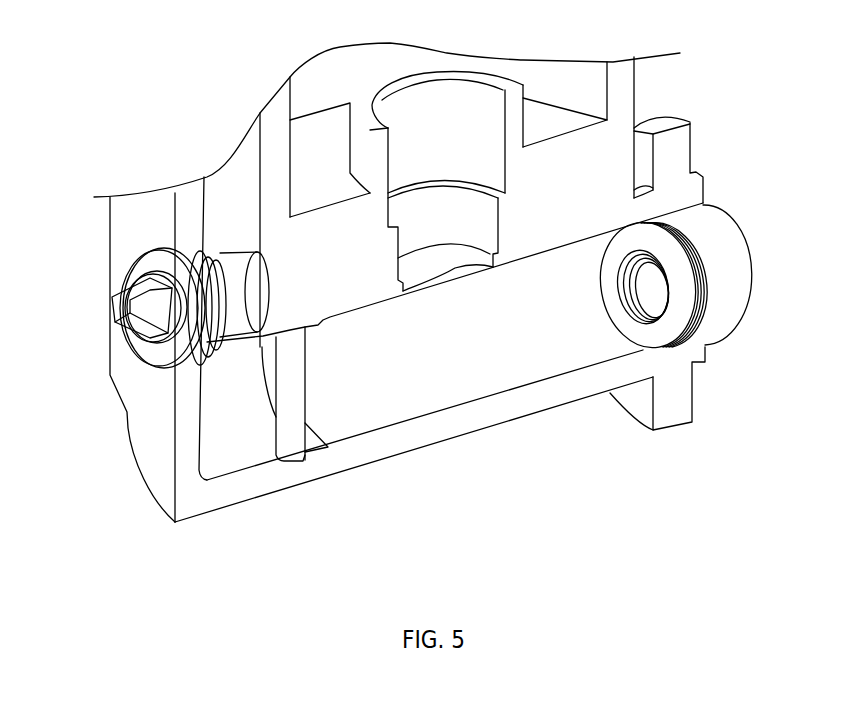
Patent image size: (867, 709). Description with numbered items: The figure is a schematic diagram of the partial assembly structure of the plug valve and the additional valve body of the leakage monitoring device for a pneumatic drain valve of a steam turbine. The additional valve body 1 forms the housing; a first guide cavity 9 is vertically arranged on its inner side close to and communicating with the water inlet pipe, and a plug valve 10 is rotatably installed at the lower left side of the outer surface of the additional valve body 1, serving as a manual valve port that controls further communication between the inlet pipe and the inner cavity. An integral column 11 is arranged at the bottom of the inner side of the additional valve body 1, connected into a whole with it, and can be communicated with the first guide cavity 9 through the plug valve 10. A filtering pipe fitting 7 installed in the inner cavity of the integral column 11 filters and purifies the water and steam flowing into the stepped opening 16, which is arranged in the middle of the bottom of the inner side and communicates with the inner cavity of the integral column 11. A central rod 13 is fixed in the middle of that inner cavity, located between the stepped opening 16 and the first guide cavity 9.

The additional valve body 1 is at (625, 112).
The filtering pipe fitting 7 is at (733, 297).
The first guide cavity 9 is at (227, 200).
The plug valve 10 is at (128, 290).
The integral column 11 is at (440, 402).
The central rod 13 is at (293, 455).
The stepped opening 16 is at (373, 187).